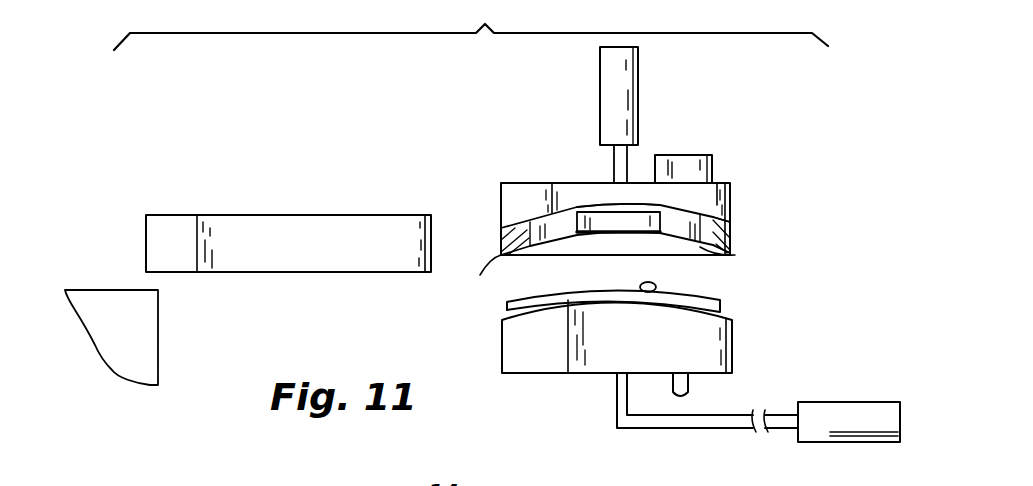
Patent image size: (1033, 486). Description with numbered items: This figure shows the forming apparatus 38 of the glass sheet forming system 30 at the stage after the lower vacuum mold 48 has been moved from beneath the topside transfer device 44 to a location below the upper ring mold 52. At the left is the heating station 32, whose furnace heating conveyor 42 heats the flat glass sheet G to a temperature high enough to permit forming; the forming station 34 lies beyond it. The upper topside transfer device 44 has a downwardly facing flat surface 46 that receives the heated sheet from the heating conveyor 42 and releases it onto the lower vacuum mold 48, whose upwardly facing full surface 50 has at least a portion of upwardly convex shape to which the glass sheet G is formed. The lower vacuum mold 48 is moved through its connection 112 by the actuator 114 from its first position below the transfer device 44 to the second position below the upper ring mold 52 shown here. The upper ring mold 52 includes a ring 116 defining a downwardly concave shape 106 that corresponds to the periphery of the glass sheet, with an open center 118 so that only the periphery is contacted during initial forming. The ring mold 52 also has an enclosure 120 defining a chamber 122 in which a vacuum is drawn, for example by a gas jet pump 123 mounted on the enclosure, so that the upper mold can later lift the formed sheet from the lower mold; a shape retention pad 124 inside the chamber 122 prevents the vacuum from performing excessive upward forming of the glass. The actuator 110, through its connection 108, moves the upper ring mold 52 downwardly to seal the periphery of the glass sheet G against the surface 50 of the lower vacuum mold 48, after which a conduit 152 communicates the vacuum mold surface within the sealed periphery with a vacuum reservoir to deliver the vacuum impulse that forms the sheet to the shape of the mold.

The glass sheet forming system 30 is at (471, 25).
The heating station 32 is at (112, 242).
The forming station 34 is at (452, 147).
The forming apparatus 38 is at (475, 346).
The heating conveyor 42 is at (98, 346).
The upper topside transfer device 44 is at (273, 217).
The flat surface 46 is at (326, 272).
The lower vacuum mold 48 is at (735, 352).
The full surface 50 is at (652, 294).
The upper ring mold 52 is at (738, 201).
The glass sheet G is at (718, 305).
The downwardly concave shape 106 is at (735, 255).
The connection 108 is at (628, 165).
The actuator 110 is at (638, 90).
The connection 112 is at (780, 432).
The actuator 114 is at (855, 438).
The ring 116 is at (497, 270).
The open center 118 is at (688, 212).
The enclosure 120 is at (530, 205).
The chamber 122 is at (720, 222).
The gas jet pump 123 is at (703, 158).
The shape retention pad 124 is at (613, 215).
The conduit 152 is at (690, 387).